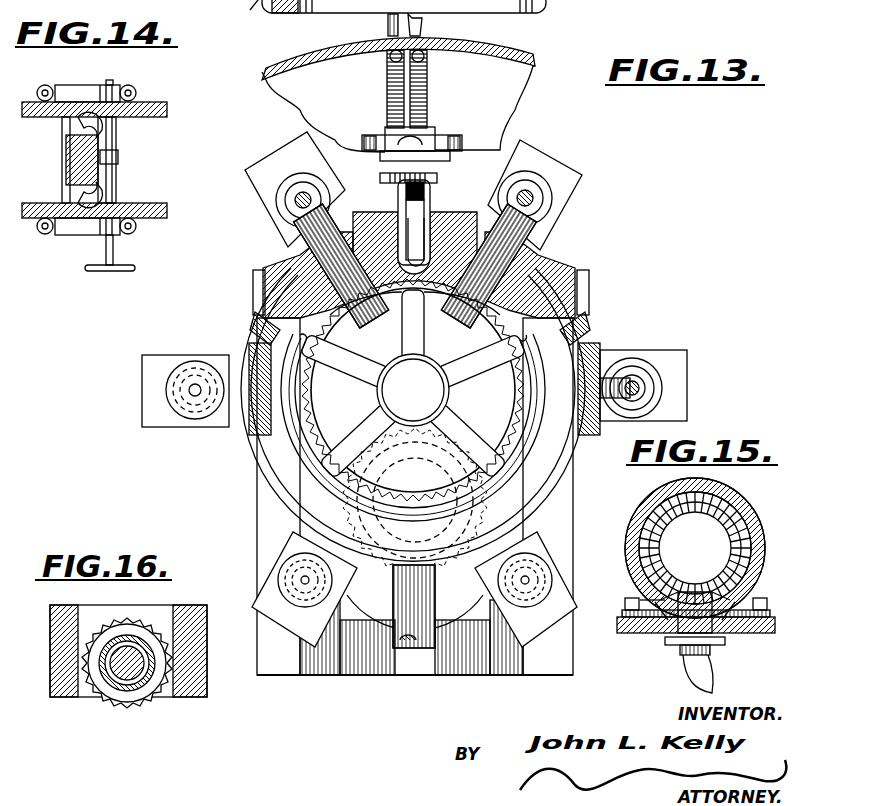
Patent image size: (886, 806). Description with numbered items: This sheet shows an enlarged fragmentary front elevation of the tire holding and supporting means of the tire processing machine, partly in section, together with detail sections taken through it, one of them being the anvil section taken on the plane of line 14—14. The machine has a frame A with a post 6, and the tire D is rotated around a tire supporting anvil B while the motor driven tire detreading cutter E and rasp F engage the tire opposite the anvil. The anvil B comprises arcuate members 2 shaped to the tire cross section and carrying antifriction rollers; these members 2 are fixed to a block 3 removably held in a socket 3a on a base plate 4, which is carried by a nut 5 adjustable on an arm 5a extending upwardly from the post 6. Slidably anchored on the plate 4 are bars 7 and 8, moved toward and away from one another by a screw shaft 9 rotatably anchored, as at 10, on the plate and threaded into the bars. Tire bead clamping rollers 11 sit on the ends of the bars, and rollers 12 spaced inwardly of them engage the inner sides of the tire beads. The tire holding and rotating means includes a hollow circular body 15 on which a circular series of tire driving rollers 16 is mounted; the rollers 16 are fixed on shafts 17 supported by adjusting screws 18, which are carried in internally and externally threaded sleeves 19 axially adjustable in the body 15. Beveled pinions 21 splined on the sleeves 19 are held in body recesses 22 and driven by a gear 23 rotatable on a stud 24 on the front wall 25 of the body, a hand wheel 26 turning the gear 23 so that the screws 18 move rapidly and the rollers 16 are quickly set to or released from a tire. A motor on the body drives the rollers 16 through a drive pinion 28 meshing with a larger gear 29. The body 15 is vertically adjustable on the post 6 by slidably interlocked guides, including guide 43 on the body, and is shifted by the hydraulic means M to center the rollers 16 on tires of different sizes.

In FIG. 15, the arcuate members 2 is at (735, 512).
In FIG. 15, the block 3 is at (695, 592).
In FIG. 15, the socket 3a is at (708, 650).
In FIG. 14, the base plate 4 is at (92, 84).
In FIG. 15, the base plate 4 is at (625, 630).
In FIG. 13, the nut 5 is at (430, 178).
In FIG. 15, the nut 5 is at (675, 655).
In FIG. 13, the arm 5a is at (406, 218).
In FIG. 15, the arm 5a is at (710, 680).
In FIG. 13, the post 6 is at (333, 665).
In FIG. 14, the bar 7 is at (66, 90).
In FIG. 15, the bar 7 is at (770, 612).
In FIG. 14, the bar 8 is at (68, 230).
In FIG. 13, the bar 8 is at (325, 165).
In FIG. 15, the bar 8 is at (622, 612).
In FIG. 14, the screw shaft 9 is at (118, 186).
In FIG. 14, the anchorage 10 is at (118, 160).
In FIG. 14, the tire bead clamping rollers 11 is at (44, 86).
In FIG. 13, the tire bead clamping rollers 11 is at (318, 118).
In FIG. 15, the tire bead clamping rollers 11 is at (625, 604).
In FIG. 14, the rollers 12 is at (78, 125).
In FIG. 13, the rollers 12 is at (420, 148).
In FIG. 15, the rollers 12 is at (655, 635).
In FIG. 13, the spacer 14 is at (353, 133).
In FIG. 13, the hollow circular body 15 is at (428, 58).
In FIG. 16, the hollow circular body 15 is at (192, 608).
In FIG. 13, the tire driving rollers 16 is at (545, 182).
In FIG. 13, the shafts 17 is at (535, 200).
In FIG. 13, the adjusting screws 18 is at (545, 217).
In FIG. 16, the adjusting screws 18 is at (108, 690).
In FIG. 13, the sleeves 19 is at (552, 262).
In FIG. 16, the sleeves 19 is at (138, 690).
In FIG. 13, the beveled pinions 21 is at (604, 279).
In FIG. 16, the beveled pinions 21 is at (150, 700).
In FIG. 13, the body recesses 22 is at (258, 340).
In FIG. 16, the body recesses 22 is at (159, 606).
In FIG. 13, the gear 23 is at (575, 352).
In FIG. 13, the stud 24 is at (413, 414).
In FIG. 13, the front wall 25 is at (248, 16).
In FIG. 13, the hand wheel 26 is at (518, 8).
In FIG. 13, the drive pinion 28 is at (415, 529).
In FIG. 13, the gear 29 is at (575, 476).
In FIG. 13, the guide 43 is at (262, 272).
In FIG. 13, the frame A is at (382, 689).
In FIG. 13, the tire supporting anvil B is at (362, 75).
In FIG. 14, the tire D is at (168, 108).
In FIG. 13, the tire D is at (547, 63).
In FIG. 15, the tire D is at (741, 491).
In FIG. 13, the tire detreading cutter E is at (441, 31).
In FIG. 13, the rasp F is at (375, 31).
In FIG. 13, the hydraulic means M is at (430, 648).